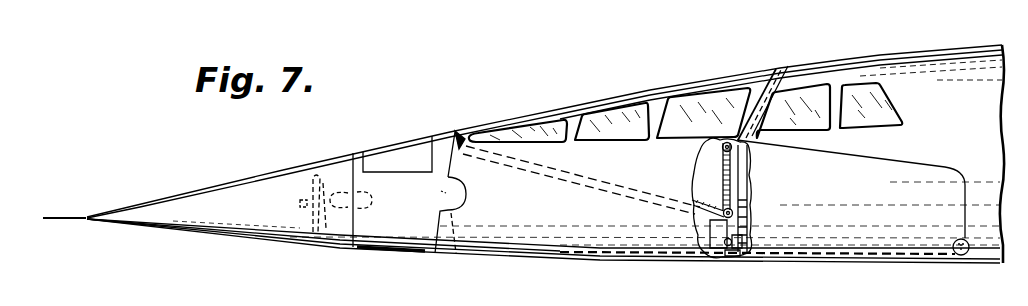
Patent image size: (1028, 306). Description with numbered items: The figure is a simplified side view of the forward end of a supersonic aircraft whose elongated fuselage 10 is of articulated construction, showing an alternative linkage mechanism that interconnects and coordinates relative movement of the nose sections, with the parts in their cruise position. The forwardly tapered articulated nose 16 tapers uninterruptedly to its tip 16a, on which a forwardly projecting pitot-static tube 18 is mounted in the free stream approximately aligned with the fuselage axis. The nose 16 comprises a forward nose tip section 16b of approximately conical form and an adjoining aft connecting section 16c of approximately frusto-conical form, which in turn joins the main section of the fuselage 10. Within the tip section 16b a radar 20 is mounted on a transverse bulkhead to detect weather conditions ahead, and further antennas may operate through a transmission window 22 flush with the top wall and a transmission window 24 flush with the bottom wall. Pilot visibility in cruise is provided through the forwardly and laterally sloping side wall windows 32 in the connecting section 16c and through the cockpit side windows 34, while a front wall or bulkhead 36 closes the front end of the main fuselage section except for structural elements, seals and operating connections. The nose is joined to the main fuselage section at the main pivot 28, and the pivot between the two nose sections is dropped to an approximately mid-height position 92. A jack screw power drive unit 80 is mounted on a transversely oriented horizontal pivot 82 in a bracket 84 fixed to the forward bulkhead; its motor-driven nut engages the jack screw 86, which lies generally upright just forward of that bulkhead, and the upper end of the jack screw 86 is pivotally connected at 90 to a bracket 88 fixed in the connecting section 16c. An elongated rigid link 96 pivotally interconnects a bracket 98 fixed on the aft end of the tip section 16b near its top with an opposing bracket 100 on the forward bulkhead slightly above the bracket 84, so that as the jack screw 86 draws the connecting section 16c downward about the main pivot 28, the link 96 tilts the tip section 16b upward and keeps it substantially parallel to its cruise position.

The fuselage 10 is at (868, 47).
The nose 16 is at (510, 74).
The tip of the nose 16a is at (88, 217).
The forward nose tip section 16b is at (353, 152).
The aft nose base or connecting section 16c is at (589, 108).
The pitot-static tube 18 is at (81, 217).
The radar 20 is at (322, 242).
The transmission window 22 is at (401, 145).
The transmission window 24 is at (398, 261).
The main pivot 28 is at (966, 256).
The side wall windows 32 is at (534, 127).
The cockpit or cabin side windows 34 is at (836, 88).
The front wall or bulkhead 36 is at (733, 96).
The jack screw power drive unit 80 is at (693, 223).
The horizontal pivot 82 is at (733, 260).
The bracket 84 is at (753, 238).
The jack screw 86 is at (744, 178).
The bracket 88 is at (722, 148).
The pivotal connection 90 is at (749, 154).
The connecting pivot 92 is at (458, 197).
The rigid link 96 is at (559, 178).
The bracket 98 is at (462, 130).
The bracket 100 is at (753, 201).